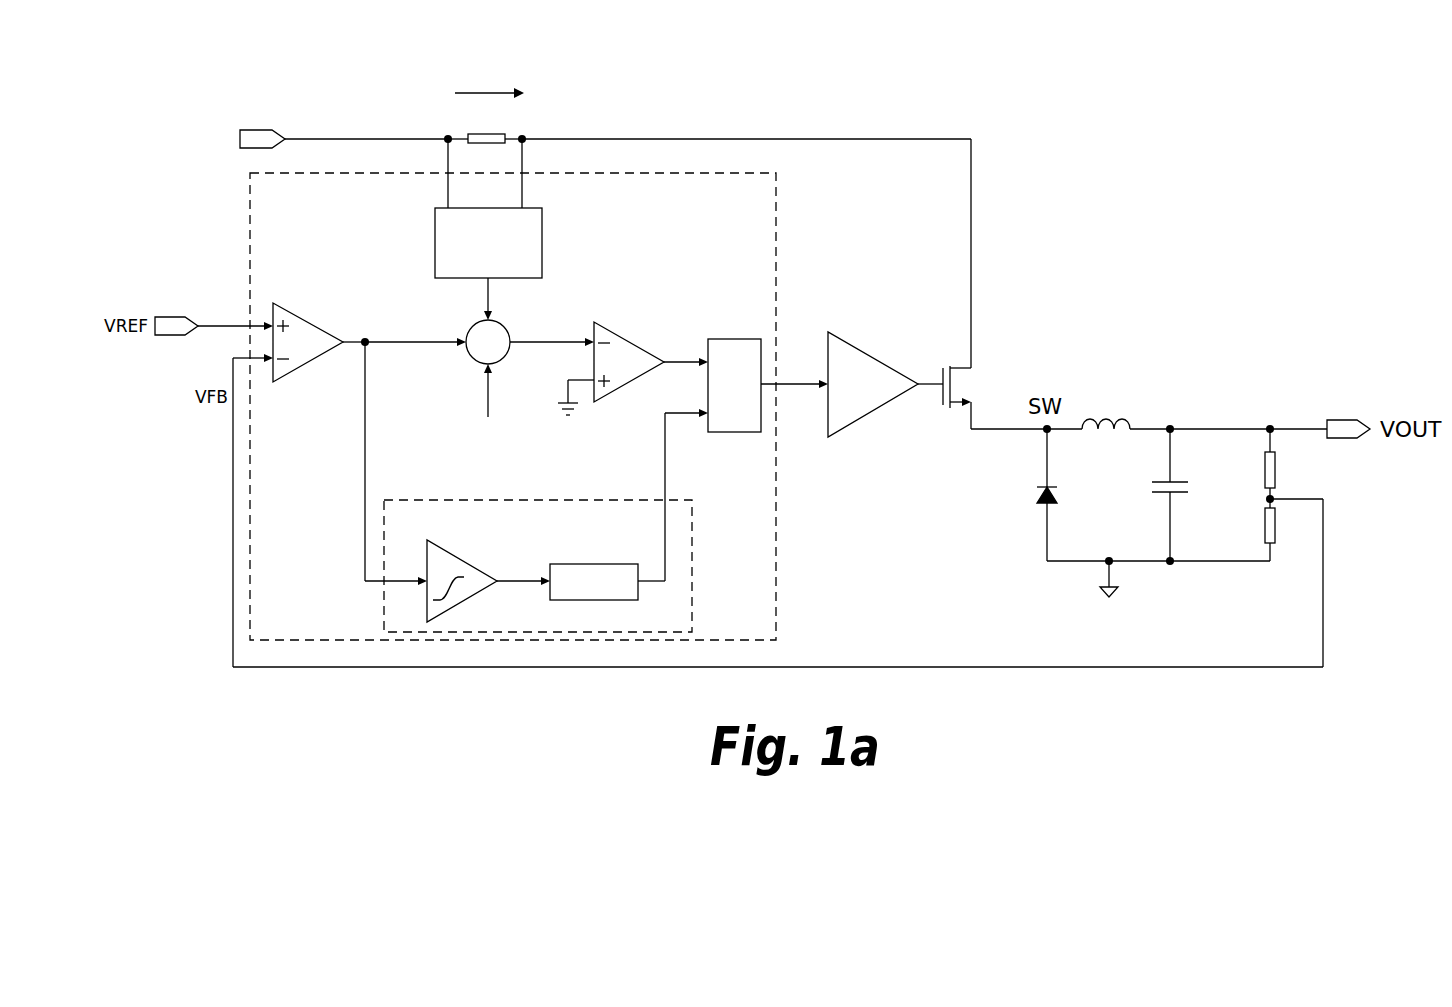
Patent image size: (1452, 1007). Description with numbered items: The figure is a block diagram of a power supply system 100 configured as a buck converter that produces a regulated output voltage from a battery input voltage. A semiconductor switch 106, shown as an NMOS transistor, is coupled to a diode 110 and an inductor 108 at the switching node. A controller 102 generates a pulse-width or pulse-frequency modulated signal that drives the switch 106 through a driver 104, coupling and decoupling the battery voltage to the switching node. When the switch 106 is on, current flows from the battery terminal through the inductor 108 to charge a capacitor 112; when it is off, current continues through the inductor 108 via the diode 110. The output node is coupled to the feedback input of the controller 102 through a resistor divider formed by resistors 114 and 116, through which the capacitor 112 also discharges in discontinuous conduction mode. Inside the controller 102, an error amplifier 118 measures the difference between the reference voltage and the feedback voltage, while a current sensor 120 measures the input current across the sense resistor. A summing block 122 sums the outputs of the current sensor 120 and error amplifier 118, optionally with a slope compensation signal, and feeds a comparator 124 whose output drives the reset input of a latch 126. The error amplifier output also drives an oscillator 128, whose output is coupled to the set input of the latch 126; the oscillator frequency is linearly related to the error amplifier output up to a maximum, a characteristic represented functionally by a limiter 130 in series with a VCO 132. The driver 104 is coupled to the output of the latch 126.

The power supply system 100 is at (201, 99).
The controller 102 is at (776, 237).
The driver 104 is at (840, 341).
The semiconductor switch 106 is at (966, 367).
The inductor 108 is at (1090, 419).
The diode 110 is at (1038, 501).
The capacitor 112 is at (1162, 496).
The resistor 114 is at (1265, 477).
The resistor 116 is at (1265, 527).
The error amplifier 118 is at (296, 312).
The current sensor 120 is at (545, 252).
The summing block 122 is at (507, 331).
The comparator 124 is at (612, 330).
The latch 126 is at (736, 339).
The oscillator 128 is at (546, 500).
The limiter 130 is at (437, 546).
The VCO 132 is at (590, 565).